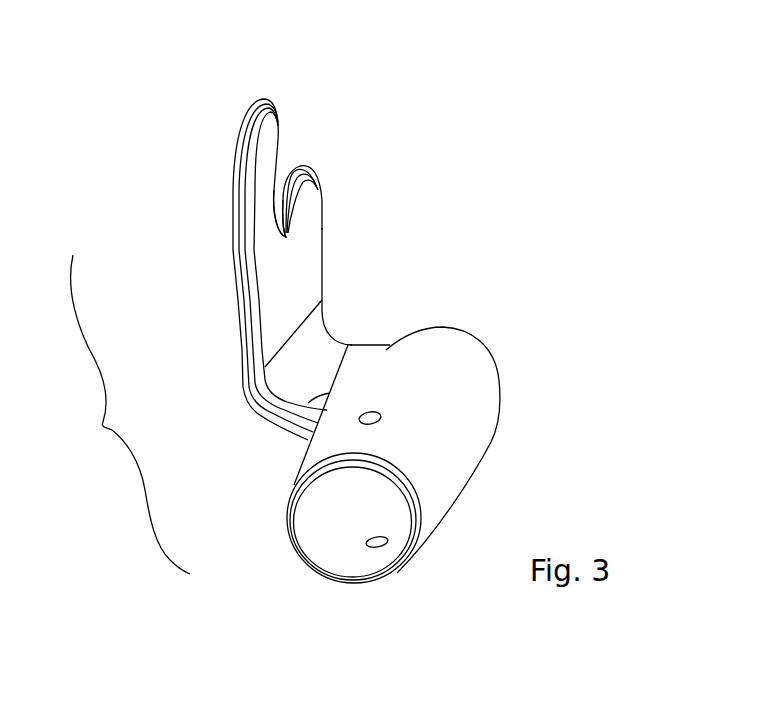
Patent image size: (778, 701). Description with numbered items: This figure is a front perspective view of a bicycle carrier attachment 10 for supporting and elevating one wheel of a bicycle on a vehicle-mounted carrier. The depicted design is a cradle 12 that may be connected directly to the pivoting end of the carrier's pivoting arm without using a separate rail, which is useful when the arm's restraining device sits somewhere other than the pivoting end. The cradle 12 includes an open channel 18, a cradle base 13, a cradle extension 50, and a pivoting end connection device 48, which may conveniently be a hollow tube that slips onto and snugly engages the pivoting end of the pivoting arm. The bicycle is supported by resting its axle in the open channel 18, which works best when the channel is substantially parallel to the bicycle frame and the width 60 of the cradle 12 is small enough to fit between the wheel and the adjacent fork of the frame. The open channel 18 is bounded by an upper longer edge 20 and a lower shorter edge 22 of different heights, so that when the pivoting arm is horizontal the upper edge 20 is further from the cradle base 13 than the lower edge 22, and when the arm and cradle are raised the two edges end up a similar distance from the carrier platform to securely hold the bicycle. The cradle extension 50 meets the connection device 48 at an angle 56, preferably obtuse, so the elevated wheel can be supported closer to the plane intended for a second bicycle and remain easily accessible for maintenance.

The bicycle carrier attachment 10 is at (123, 414).
The cradle 12 is at (352, 285).
The cradle base 13 is at (293, 338).
The open channel 18 is at (282, 166).
The upper longer edge of open channel 20 is at (248, 110).
The lower shorter edge of open channel 22 is at (313, 188).
The pivotable end connection mechanism 48 is at (465, 453).
The cradle extension 50 is at (285, 436).
The angle of cradle extension to carrier pivoting arm 56 is at (384, 347).
The width of cradle 60 is at (290, 247).